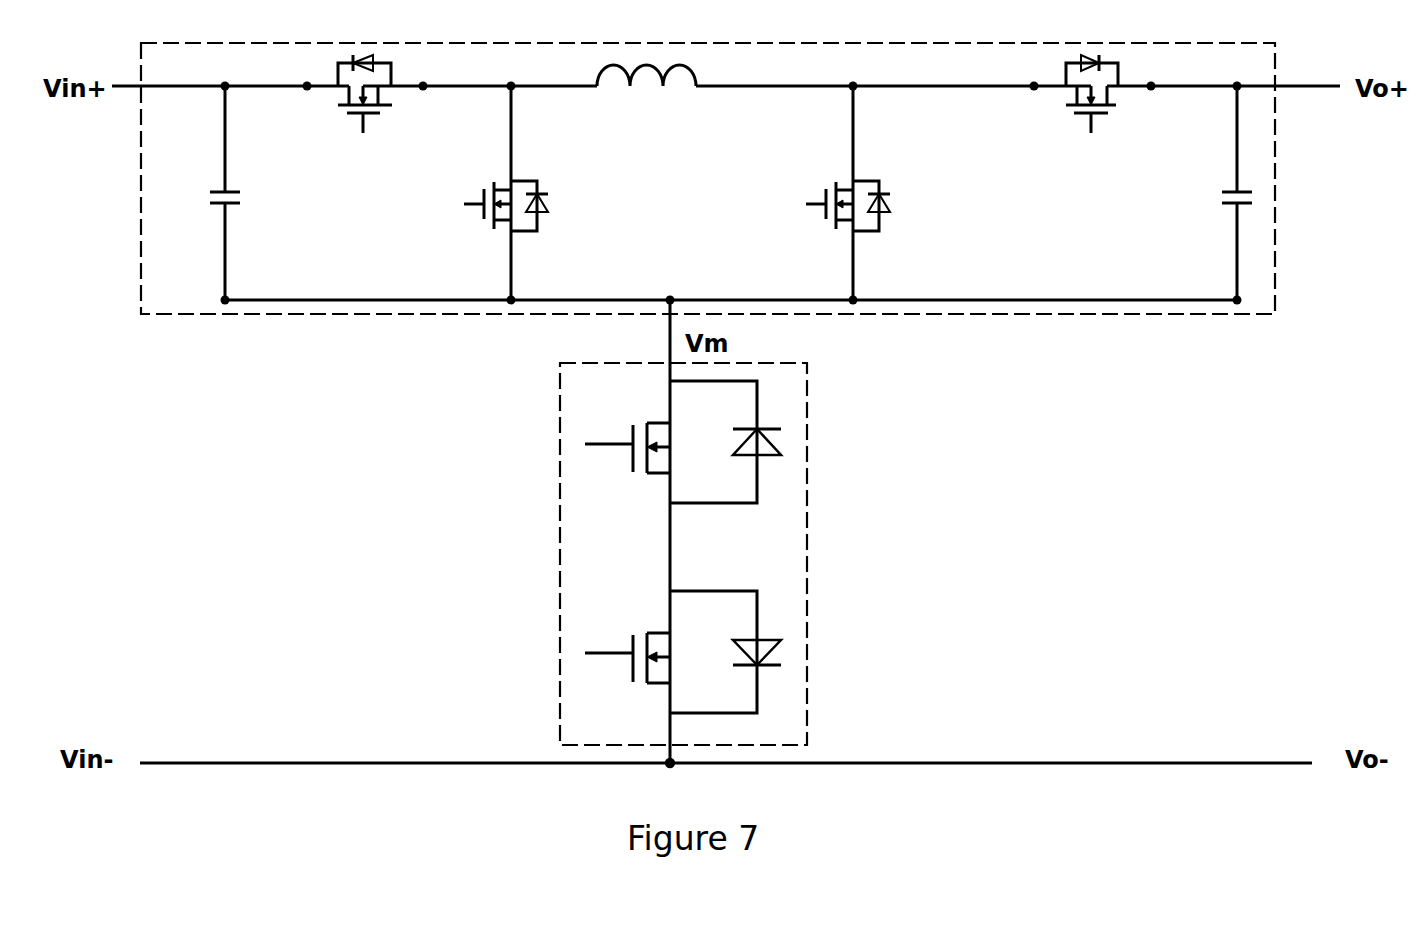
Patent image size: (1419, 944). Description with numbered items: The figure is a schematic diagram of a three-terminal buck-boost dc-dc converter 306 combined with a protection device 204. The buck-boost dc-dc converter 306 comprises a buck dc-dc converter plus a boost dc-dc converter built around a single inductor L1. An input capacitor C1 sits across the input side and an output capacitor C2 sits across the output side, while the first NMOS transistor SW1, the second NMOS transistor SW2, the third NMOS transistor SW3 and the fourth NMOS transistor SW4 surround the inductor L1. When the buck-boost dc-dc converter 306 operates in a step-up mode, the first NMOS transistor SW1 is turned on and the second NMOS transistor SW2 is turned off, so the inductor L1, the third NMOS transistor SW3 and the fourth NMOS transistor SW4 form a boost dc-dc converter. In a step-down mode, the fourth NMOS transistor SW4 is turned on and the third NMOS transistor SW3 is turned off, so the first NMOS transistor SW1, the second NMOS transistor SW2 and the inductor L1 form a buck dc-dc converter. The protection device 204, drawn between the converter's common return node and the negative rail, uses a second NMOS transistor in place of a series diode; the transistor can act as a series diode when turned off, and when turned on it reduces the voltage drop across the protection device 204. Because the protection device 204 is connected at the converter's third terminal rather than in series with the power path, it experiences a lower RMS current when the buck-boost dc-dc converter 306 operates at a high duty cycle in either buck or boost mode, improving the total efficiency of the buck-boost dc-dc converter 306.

The buck-boost dc-dc converter 306 is at (653, 193).
The protection device 204 is at (818, 587).
The first NMOS transistor SW1 is at (336, 97).
The second NMOS transistor SW2 is at (541, 193).
The third NMOS transistor SW3 is at (883, 193).
The fourth NMOS transistor SW4 is at (1061, 97).
The input capacitor C1 is at (195, 193).
The output capacitor C2 is at (1215, 193).
The inductor L1 is at (646, 103).